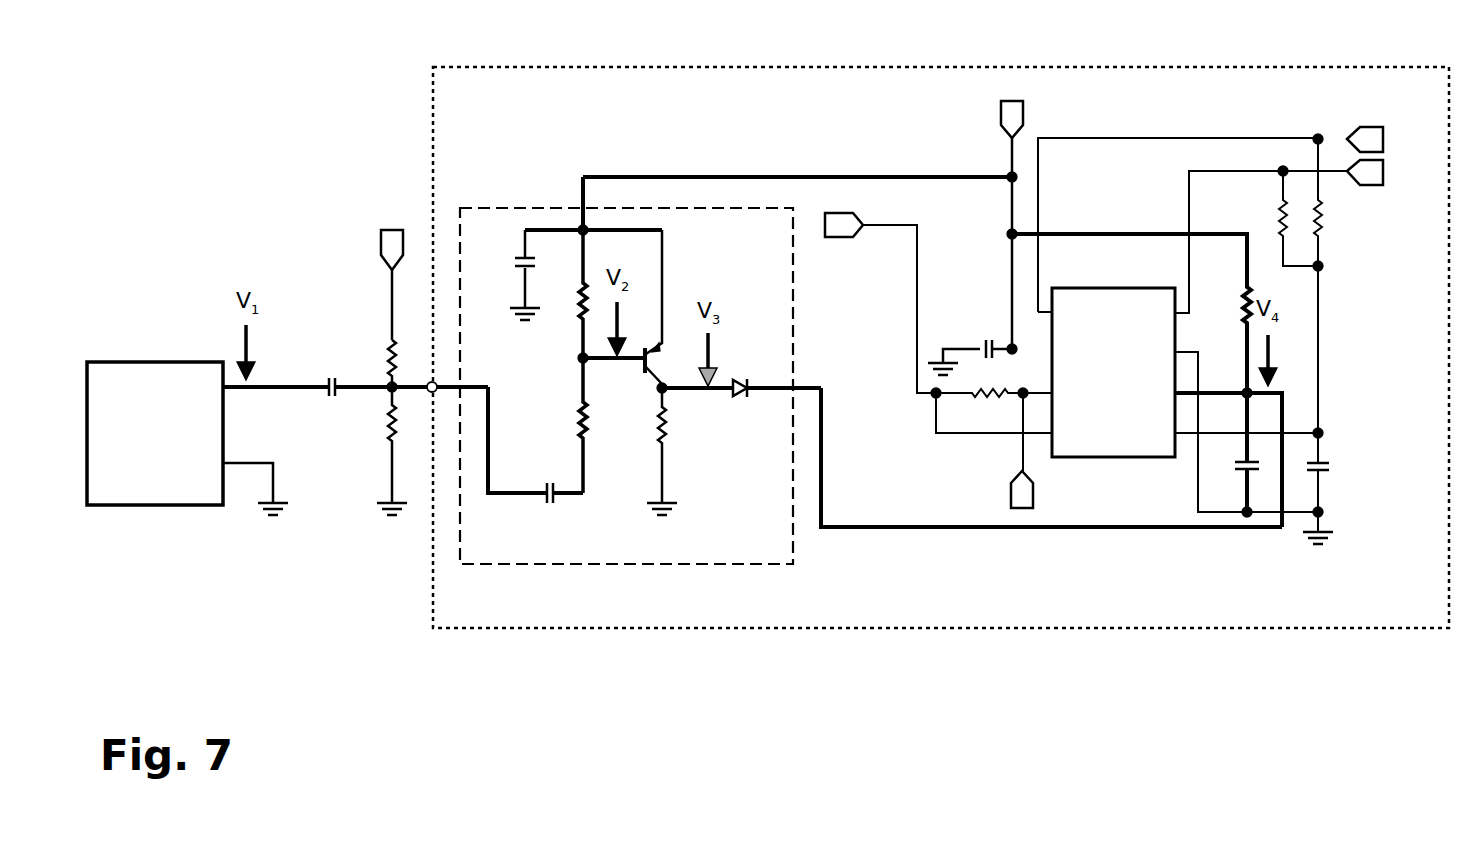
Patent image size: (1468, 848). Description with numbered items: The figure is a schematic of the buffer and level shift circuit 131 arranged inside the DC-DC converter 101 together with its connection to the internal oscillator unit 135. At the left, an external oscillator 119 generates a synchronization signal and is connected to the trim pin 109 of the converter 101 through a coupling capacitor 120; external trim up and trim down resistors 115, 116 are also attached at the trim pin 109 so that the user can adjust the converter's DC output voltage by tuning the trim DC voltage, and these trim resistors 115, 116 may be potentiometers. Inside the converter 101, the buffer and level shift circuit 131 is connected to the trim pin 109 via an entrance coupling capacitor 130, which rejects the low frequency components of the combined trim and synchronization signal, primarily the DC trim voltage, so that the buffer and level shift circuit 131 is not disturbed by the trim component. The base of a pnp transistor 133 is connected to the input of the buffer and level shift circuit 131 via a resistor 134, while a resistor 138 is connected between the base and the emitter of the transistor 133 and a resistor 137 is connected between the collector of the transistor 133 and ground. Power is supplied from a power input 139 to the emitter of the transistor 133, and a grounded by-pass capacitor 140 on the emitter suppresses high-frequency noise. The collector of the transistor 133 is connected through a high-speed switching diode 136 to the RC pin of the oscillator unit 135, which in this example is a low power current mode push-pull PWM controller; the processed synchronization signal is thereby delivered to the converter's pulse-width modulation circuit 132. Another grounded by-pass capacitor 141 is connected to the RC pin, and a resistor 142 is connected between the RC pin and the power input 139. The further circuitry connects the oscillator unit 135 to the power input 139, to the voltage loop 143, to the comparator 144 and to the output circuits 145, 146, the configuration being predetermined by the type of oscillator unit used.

The DC-DC converter 101 is at (642, 88).
The trim pin 109 is at (440, 390).
The trim up resistor 115 is at (388, 360).
The trim down resistor 116 is at (386, 420).
The external oscillator 119 is at (138, 515).
The coupling capacitor 120 is at (330, 400).
The coupling capacitor 130 is at (550, 505).
The buffer and level shift circuit 131 is at (620, 575).
The pulse-width modulation circuit 132 is at (1117, 588).
The pnp transistor 133 is at (652, 376).
The resistor 134 is at (578, 420).
The oscillator unit 135 is at (1115, 443).
The high-speed switching diode 136 is at (738, 380).
The resistor 137 is at (672, 435).
The resistor 138 is at (578, 320).
The power input 139 is at (1015, 120).
The by-pass capacitor 140 is at (524, 262).
The by-pass capacitor 141 is at (1243, 475).
The resistor 142 is at (1255, 300).
The voltage loop 143 is at (836, 240).
The comparator 144 is at (1022, 505).
The output circuit 145 is at (1370, 136).
The output circuit 146 is at (1365, 180).